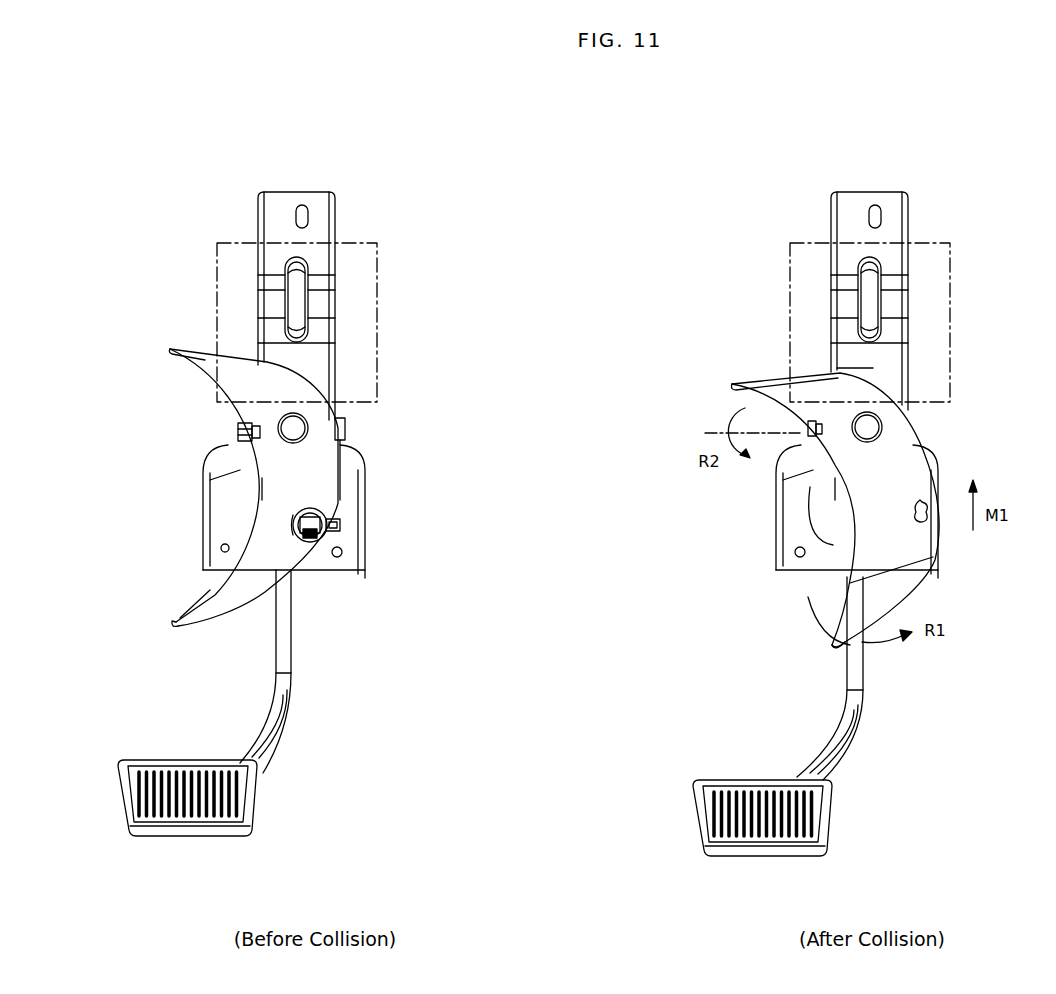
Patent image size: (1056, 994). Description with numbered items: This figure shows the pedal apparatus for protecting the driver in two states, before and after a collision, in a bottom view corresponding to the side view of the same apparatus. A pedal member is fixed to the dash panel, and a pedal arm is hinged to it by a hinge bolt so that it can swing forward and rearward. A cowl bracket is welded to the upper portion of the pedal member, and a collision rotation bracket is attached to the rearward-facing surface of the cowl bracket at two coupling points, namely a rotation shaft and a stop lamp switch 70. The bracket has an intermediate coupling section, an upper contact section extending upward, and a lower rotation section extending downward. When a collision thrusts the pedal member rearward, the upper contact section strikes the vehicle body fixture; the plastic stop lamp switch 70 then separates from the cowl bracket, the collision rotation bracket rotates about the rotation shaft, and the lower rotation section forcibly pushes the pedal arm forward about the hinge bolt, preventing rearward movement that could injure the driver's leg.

The stop lamp switch 70 is at (330, 530).